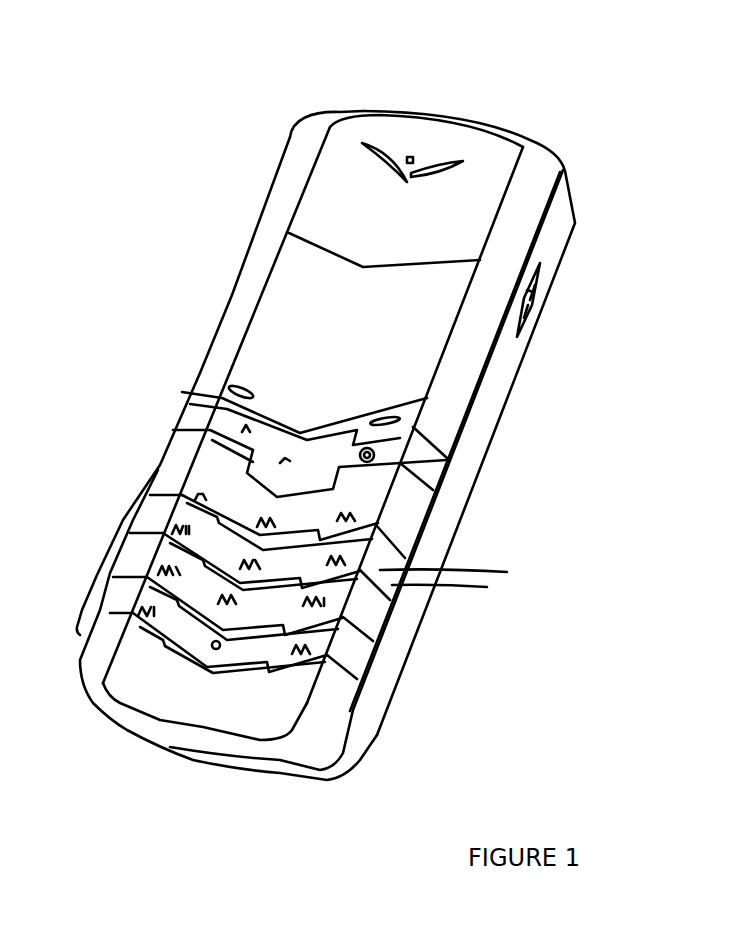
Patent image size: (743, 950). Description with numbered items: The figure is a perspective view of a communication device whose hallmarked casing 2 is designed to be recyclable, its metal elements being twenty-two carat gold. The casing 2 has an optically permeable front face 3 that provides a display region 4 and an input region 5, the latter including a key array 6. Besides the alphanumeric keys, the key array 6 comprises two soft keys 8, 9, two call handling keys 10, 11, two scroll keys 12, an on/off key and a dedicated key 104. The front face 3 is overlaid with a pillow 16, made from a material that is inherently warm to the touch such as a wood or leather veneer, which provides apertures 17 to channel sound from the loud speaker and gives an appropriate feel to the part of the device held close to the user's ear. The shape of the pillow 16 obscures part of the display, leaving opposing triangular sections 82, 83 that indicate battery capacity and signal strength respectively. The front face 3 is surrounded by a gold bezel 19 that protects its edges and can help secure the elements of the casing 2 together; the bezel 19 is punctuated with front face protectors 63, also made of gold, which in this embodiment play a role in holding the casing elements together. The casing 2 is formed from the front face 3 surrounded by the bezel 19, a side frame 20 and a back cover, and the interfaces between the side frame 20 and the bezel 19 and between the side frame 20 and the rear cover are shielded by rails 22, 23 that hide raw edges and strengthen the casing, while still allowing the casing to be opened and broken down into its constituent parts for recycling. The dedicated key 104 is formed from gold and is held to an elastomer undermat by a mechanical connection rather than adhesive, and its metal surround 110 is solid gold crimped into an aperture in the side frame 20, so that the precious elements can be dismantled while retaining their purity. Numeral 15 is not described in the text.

The casing 2 is at (412, 687).
The front face 3 is at (277, 367).
The display region 4 is at (340, 350).
The input region 5 is at (347, 500).
The key array 6 is at (138, 490).
The soft key 8 is at (423, 422).
The soft key 9 is at (182, 392).
The call handling key 10 is at (173, 430).
The call handling key 11 is at (447, 460).
The scroll keys 12 is at (427, 398).
The numeric keys 15 is at (370, 515).
The pillow 16 is at (340, 160).
The apertures 17 is at (412, 152).
The bezel 19 is at (533, 188).
The side frame 20 is at (577, 230).
The rail 22 is at (570, 183).
The rail 23 is at (560, 265).
The front face protectors 63 is at (330, 622).
The triangular section 82 is at (290, 245).
The triangular section 83 is at (433, 273).
The dedicated key 104 is at (547, 312).
The metal surround 110 is at (540, 267).